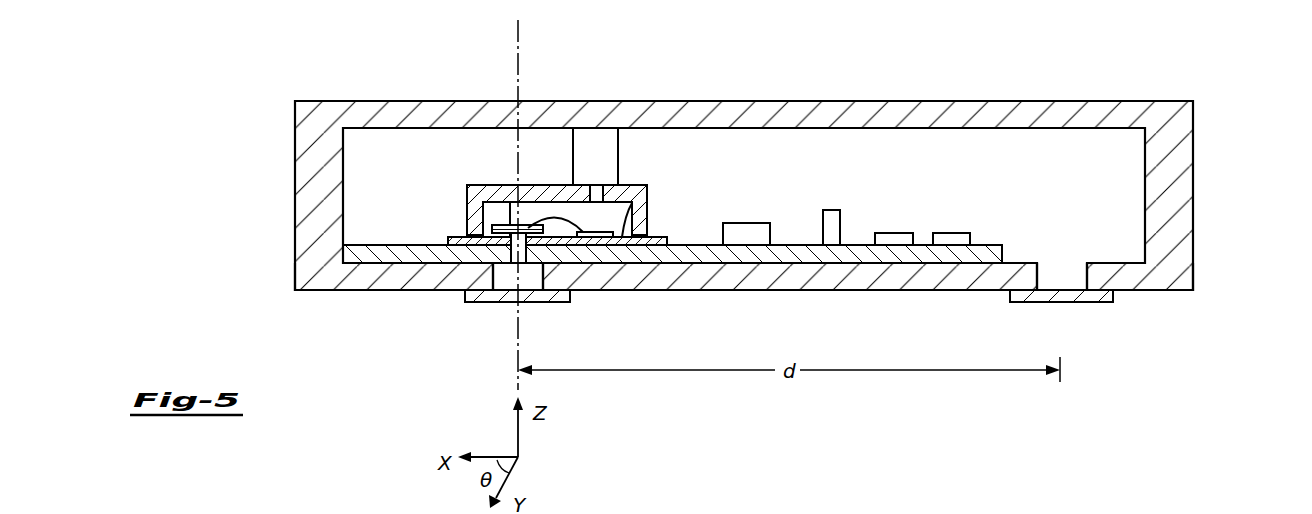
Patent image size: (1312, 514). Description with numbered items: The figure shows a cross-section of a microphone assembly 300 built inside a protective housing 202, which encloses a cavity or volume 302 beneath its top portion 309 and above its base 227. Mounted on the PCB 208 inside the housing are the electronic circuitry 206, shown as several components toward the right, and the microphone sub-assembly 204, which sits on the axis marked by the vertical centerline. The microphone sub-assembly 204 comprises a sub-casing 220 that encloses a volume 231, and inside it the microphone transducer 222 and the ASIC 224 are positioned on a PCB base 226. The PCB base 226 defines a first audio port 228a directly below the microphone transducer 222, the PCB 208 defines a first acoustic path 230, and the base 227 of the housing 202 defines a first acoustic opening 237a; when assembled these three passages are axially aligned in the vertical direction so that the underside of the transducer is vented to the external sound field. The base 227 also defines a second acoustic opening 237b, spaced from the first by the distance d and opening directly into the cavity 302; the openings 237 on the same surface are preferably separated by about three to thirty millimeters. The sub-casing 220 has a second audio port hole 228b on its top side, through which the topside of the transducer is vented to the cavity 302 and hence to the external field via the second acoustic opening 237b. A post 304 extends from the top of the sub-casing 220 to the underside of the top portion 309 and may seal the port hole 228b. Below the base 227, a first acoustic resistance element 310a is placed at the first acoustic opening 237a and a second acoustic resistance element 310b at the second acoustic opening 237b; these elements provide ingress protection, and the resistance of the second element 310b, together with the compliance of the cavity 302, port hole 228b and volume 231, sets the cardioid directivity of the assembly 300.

The protective housing 202 is at (1123, 101).
The microphone sub-assembly 204 is at (507, 172).
The electronic circuitry 206 is at (779, 203).
The PCB 208 is at (987, 244).
The sub-casing 220 is at (648, 218).
The microphone transducer 222 is at (512, 225).
The ASIC 224 is at (597, 232).
The PCB base 226 is at (645, 191).
The base 227 is at (1178, 276).
The first audio port 228a is at (518, 240).
The second audio port 228b is at (618, 185).
The first acoustic path 230 is at (512, 258).
The volume 231 is at (498, 212).
The openings 237 is at (771, 15).
The first acoustic opening 237a is at (522, 282).
The second acoustic opening 237b is at (1058, 282).
The microphone assembly 300 is at (1052, 66).
The cavity 302 is at (767, 170).
The post 304 is at (597, 165).
The top portion 309 is at (895, 101).
The first acoustic resistance element 310a is at (490, 302).
The second acoustic resistance element 310b is at (1090, 303).